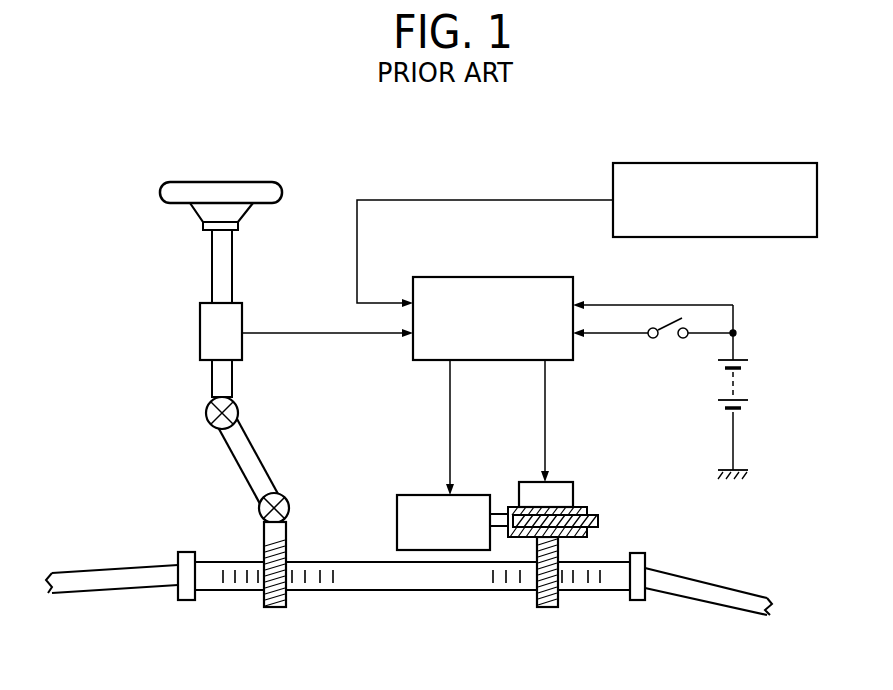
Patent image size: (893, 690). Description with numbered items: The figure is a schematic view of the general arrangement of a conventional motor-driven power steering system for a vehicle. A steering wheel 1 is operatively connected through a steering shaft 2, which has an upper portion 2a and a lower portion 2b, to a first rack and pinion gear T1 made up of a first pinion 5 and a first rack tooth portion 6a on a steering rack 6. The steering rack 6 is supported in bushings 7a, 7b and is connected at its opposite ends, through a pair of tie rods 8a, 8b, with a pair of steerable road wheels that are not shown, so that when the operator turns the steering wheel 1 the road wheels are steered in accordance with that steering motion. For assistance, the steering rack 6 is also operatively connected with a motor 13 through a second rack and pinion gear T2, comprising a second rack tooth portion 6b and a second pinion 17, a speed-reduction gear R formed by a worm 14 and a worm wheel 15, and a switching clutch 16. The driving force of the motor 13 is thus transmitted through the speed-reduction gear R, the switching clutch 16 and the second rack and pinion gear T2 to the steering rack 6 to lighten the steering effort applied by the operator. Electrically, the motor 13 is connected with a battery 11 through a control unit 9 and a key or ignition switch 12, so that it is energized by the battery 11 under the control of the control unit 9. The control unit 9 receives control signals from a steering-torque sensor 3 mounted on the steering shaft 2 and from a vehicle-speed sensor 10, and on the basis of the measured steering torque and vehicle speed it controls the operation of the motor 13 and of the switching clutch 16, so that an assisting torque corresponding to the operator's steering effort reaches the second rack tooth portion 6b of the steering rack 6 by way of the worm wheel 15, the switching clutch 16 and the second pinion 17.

The steering wheel 1 is at (168, 190).
The steering shaft 2 is at (206, 283).
The upper portion 2a is at (222, 248).
The lower portion 2b is at (243, 465).
The steering-torque sensor 3 is at (208, 330).
The first pinion 5 is at (277, 608).
The steering rack 6 is at (412, 609).
The first rack tooth portion 6a is at (313, 590).
The second rack tooth portion 6b is at (497, 592).
The bushing 7a is at (187, 600).
The bushing 7b is at (640, 600).
The tie rod 8a is at (103, 588).
The tie rod 8b is at (708, 592).
The control unit 9 is at (498, 277).
The vehicle-speed sensor 10 is at (713, 167).
The battery 11 is at (738, 386).
The key or ignition switch 12 is at (672, 340).
The motor 13 is at (415, 495).
The worm 14 is at (598, 520).
The worm wheel 15 is at (588, 510).
The switching clutch 16 is at (565, 482).
The second pinion 17 is at (551, 608).
The first rack and pinion gear T1 is at (294, 546).
The second rack and pinion gear T2 is at (592, 551).
The speed-reduction gear R is at (602, 501).